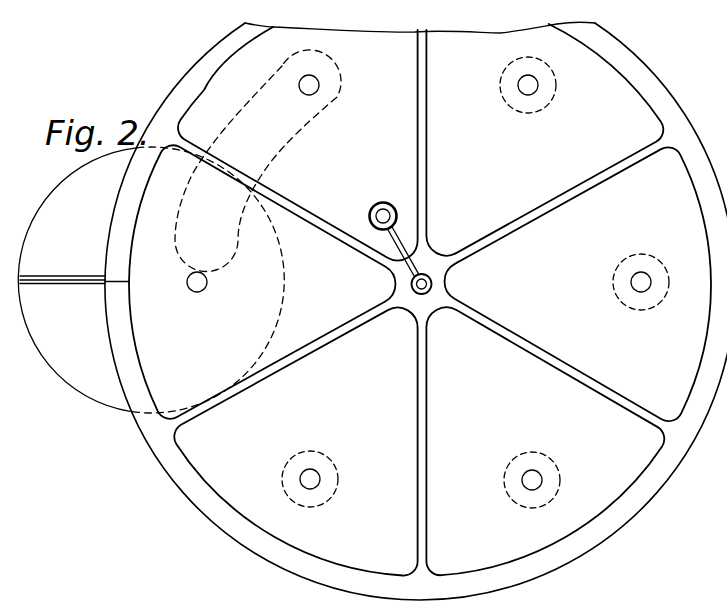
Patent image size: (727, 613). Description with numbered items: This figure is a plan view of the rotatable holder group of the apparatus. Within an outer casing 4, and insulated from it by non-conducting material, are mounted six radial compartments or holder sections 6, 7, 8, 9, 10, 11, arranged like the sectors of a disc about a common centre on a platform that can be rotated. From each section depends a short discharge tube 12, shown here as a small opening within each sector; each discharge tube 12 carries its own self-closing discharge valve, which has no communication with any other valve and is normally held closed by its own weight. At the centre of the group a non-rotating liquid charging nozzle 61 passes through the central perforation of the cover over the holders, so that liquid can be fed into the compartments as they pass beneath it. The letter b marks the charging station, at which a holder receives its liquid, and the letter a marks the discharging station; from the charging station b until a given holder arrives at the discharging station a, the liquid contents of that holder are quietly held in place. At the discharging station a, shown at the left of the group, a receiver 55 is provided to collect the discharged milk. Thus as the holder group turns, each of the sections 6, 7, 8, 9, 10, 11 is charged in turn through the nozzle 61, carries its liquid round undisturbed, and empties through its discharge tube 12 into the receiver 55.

The outer casing 4 is at (178, 486).
The radial compartment or holder section 6 is at (262, 281).
The radial compartment or holder section 7 is at (298, 143).
The radial compartment or holder section 8 is at (544, 140).
The radial compartment or holder section 9 is at (578, 284).
The radial compartment or holder section 10 is at (545, 441).
The radial compartment or holder section 11 is at (295, 442).
The discharge tube 12 is at (631, 282).
The receiver 55 is at (151, 280).
The liquid charging nozzle 61 is at (385, 203).
The discharging station a is at (258, 186).
The charging station b is at (386, 130).